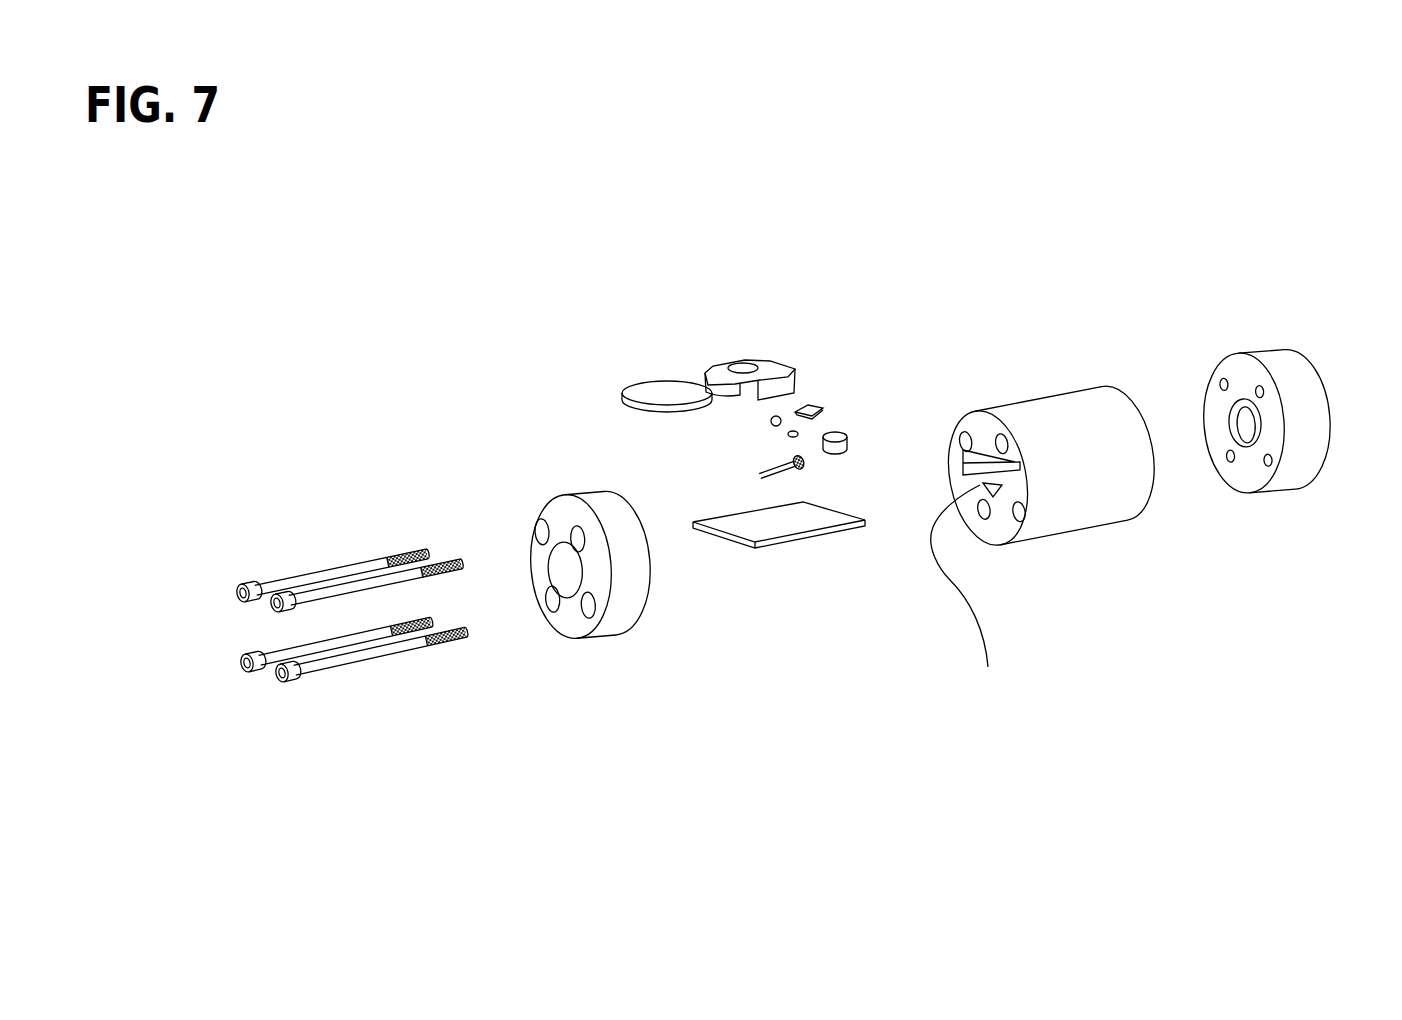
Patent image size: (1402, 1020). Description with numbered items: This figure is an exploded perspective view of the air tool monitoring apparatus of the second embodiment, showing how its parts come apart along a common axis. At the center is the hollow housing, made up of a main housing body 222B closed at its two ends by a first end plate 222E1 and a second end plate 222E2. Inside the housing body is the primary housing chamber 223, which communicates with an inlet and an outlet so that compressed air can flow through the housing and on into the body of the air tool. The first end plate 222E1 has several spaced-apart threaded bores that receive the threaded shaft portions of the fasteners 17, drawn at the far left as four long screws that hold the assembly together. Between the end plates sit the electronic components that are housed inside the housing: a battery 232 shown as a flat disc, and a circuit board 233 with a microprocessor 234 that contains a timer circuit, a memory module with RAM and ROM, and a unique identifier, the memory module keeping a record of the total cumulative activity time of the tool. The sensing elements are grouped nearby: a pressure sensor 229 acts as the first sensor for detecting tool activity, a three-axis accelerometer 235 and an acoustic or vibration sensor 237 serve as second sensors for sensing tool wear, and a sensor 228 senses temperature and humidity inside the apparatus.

The fasteners 17 is at (345, 672).
The second end plate 222E2 is at (637, 643).
The battery 232 is at (625, 390).
The microprocessor 234 is at (822, 408).
The sensor 228 is at (800, 431).
The pressure sensor 229 is at (845, 438).
The acoustic or vibration sensor 237 is at (735, 474).
The three-axis accelerometer 235 is at (771, 425).
The circuit board 233 is at (805, 543).
The main housing body 222B is at (1100, 538).
The primary housing chamber 223 is at (966, 604).
The first end plate 222E1 is at (1316, 497).